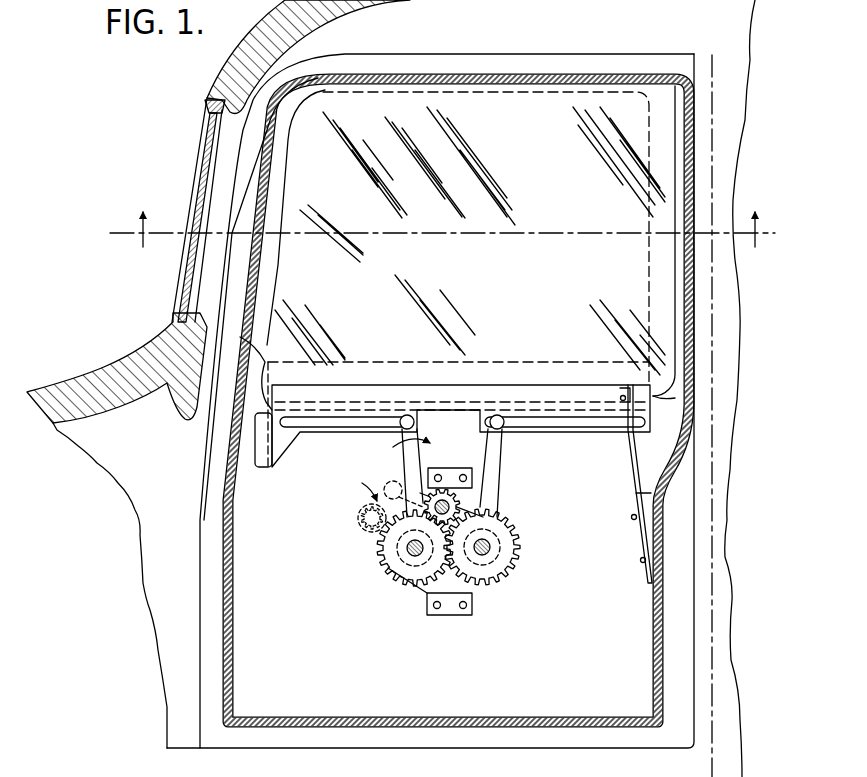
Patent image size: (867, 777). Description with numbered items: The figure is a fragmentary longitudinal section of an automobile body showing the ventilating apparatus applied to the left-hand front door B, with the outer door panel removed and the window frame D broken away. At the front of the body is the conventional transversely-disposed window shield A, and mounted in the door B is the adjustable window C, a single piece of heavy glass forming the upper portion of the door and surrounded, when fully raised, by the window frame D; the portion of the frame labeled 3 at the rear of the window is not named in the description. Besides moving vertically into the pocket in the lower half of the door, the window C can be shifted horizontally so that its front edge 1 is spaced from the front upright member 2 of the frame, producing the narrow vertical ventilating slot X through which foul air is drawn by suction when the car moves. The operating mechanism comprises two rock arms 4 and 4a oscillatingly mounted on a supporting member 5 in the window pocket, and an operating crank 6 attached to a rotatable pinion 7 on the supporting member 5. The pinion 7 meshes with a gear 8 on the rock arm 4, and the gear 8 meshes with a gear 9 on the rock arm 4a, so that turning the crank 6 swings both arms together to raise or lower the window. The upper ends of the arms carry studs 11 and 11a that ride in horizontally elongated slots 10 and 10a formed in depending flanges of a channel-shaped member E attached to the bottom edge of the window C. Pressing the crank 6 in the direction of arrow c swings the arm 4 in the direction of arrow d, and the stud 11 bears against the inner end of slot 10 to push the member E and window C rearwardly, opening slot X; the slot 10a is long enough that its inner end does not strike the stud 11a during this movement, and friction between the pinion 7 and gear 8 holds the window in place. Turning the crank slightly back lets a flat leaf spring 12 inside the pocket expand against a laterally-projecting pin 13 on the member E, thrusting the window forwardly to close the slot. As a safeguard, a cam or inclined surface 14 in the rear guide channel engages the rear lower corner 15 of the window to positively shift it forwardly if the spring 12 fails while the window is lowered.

The window shield A is at (204, 160).
The front door B is at (230, 565).
The adjustable window C is at (455, 103).
The window frame D is at (268, 107).
The horizontally-disposed member E is at (447, 393).
The ventilating slot X is at (279, 267).
The front edge 1 is at (291, 192).
The front upright member 2 is at (443, 228).
The glass run channel 3 is at (665, 183).
The rock arm 4 is at (403, 463).
The rock arm 4a is at (493, 465).
The supporting member 5 is at (460, 583).
The operating crank 6 is at (372, 518).
The pinion 7 is at (448, 497).
The gear 8 is at (393, 563).
The gear 9 is at (517, 540).
The elongated slot 10 is at (331, 422).
The elongated slot 10a is at (557, 420).
The stud 11 is at (407, 415).
The stud 11a is at (497, 415).
The spring 12 is at (631, 467).
The laterally-projecting pin 13 is at (622, 397).
The cam or inclined surface 14 is at (677, 440).
The rear lower corner 15 is at (656, 398).
The arrow c is at (389, 489).
The arrow d is at (419, 432).